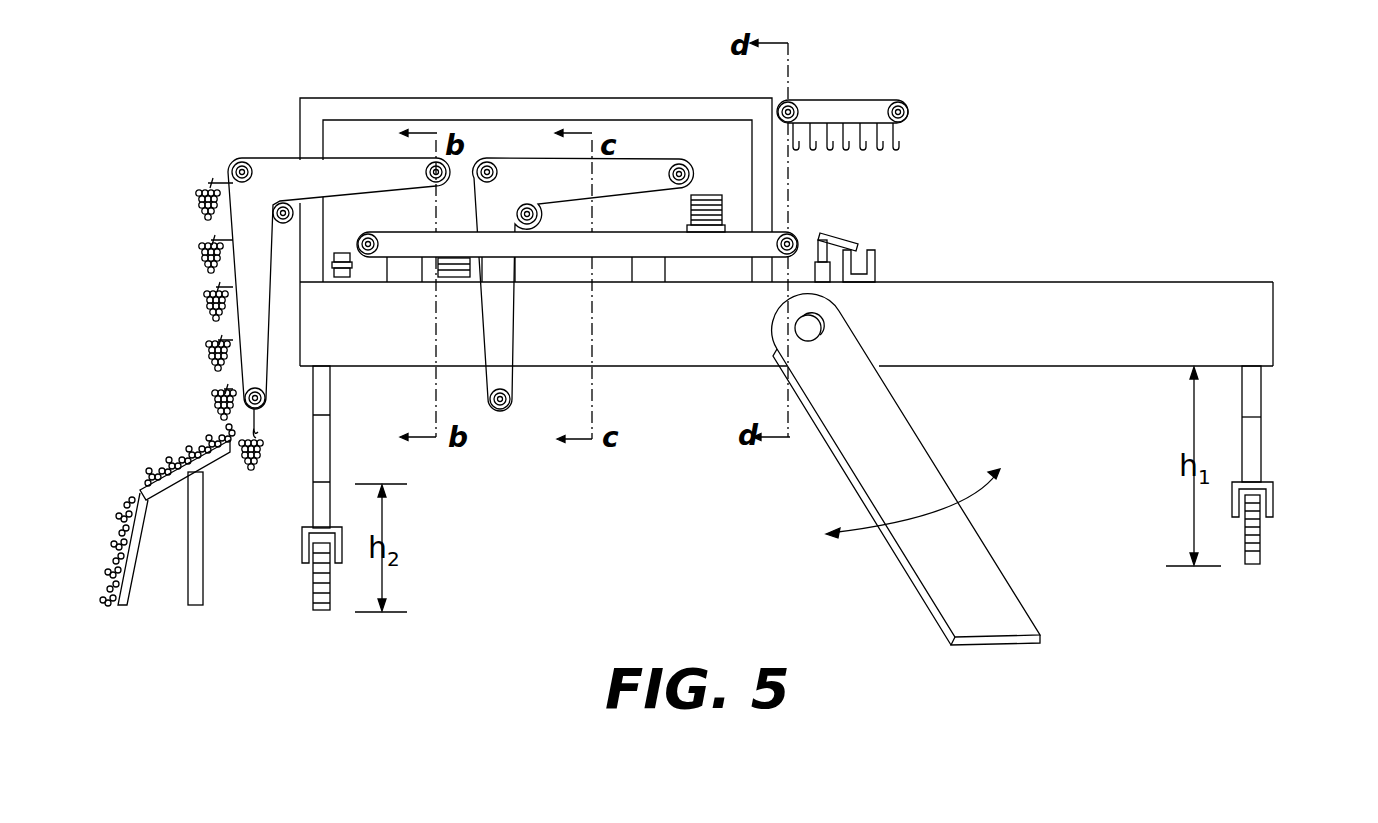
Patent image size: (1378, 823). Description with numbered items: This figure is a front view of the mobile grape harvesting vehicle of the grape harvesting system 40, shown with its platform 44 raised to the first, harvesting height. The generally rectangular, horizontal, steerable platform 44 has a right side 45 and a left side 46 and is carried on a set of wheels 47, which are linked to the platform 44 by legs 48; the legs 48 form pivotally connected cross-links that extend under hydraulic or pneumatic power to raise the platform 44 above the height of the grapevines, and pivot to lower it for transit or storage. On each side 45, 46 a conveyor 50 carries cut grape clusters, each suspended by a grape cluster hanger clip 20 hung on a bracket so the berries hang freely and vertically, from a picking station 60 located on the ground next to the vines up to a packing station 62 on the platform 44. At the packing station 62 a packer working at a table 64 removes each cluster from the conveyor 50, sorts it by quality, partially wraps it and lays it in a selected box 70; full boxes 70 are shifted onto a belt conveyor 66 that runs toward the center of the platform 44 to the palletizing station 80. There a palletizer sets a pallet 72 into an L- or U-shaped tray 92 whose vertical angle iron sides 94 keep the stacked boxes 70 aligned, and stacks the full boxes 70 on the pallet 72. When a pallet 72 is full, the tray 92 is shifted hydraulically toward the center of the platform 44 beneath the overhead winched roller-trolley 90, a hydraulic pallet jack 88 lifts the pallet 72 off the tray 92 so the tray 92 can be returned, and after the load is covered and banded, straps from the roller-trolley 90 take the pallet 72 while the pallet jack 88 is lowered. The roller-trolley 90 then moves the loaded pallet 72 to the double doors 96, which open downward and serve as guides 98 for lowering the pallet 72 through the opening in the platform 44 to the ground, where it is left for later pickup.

The grape cluster hanger clip 20 is at (208, 183).
The grape harvesting system 40 is at (1098, 144).
The platform 44 is at (1095, 282).
The right side 45 is at (300, 327).
The left side 46 is at (1275, 319).
The wheels 47 is at (318, 613).
The legs 48 is at (313, 497).
The conveyor 50 is at (245, 158).
The picking station 60 is at (180, 559).
The packing station 62 is at (385, 262).
The table 64 is at (415, 273).
The belt conveyor 66 is at (470, 228).
The boxes 70 is at (703, 195).
The pallet 72 is at (450, 277).
The palletizing station 80 is at (900, 146).
The hydraulic pallet jack 88 is at (822, 285).
The overhead winched roller-trolley 90 is at (847, 100).
The tray 92 is at (842, 233).
The vertical angle iron sides 94 is at (875, 263).
The double doors 96 is at (858, 468).
The guides 98 is at (977, 553).